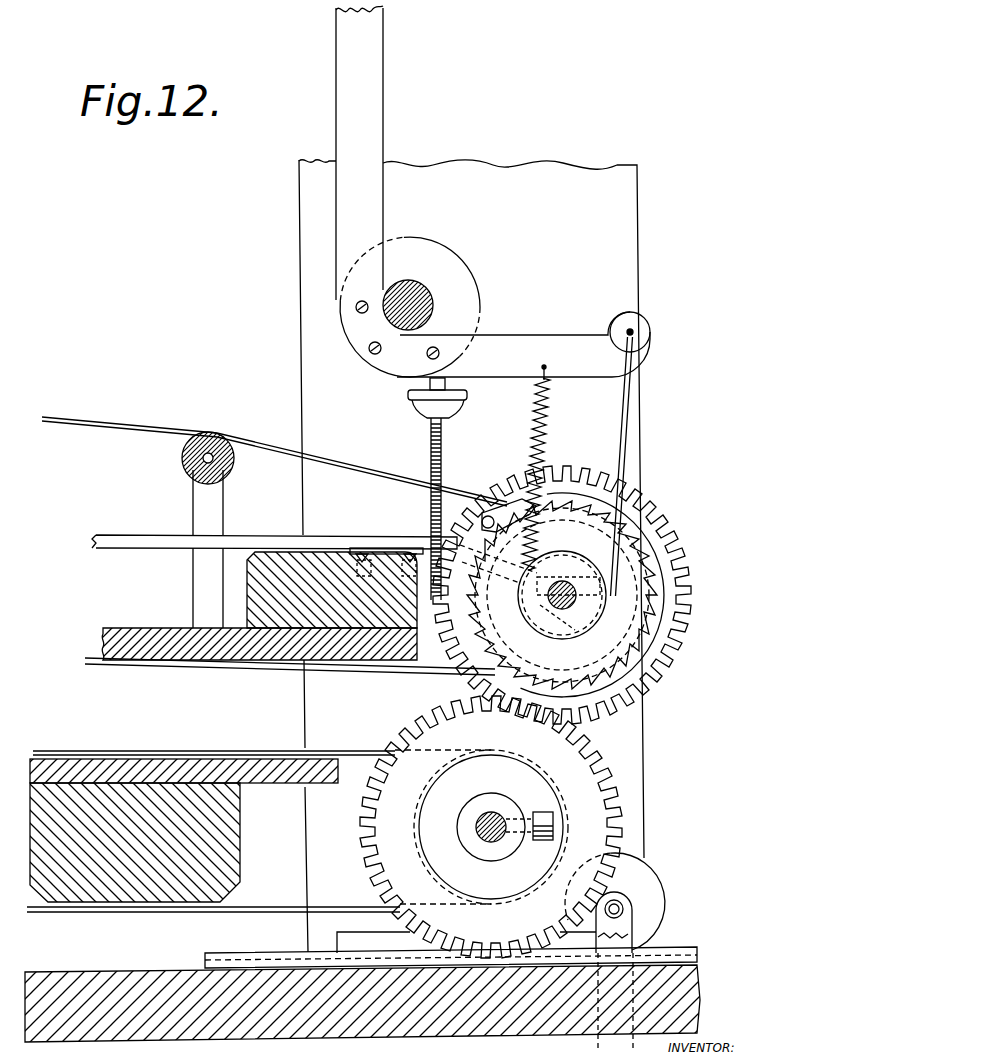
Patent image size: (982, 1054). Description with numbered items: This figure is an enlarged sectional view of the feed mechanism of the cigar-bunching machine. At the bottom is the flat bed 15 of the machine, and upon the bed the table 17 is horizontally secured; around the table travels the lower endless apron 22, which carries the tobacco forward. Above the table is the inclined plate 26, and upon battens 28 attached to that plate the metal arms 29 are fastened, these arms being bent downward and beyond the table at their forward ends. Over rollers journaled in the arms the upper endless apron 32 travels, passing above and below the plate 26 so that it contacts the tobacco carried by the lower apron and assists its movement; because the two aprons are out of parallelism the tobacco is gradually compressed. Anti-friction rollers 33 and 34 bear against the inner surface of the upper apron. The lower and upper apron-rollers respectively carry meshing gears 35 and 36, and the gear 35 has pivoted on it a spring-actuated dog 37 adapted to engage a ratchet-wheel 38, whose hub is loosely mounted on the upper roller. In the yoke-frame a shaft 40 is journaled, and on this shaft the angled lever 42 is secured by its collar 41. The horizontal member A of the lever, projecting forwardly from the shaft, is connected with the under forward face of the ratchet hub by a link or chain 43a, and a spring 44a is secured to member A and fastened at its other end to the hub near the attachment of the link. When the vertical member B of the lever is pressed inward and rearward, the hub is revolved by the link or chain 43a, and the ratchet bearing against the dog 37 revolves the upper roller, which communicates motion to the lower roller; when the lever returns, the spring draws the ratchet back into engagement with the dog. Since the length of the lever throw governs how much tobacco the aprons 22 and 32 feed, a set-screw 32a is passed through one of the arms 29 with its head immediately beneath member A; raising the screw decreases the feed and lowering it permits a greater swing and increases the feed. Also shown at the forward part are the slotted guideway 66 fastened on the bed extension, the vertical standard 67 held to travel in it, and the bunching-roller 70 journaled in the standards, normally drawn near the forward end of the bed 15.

The bed 15 is at (362, 1003).
The table 17 is at (250, 736).
The endless apron 22 is at (350, 751).
The plate 26 is at (259, 631).
The battens 28 is at (256, 599).
The metal arms 29 is at (274, 537).
The endless apron 32 is at (289, 445).
The set-screw 32a is at (432, 453).
The anti-friction roller 33 is at (232, 475).
The anti-friction roller 34 is at (571, 585).
The gear 35 is at (582, 471).
The gear 36 is at (492, 737).
The spring-actuated dog 37 is at (500, 503).
The ratchet-wheel 38 is at (628, 565).
The shaft 40 is at (428, 299).
The collar 41 is at (410, 307).
The angled lever 42 is at (397, 332).
The link or chain 43a is at (628, 413).
The spring 44a is at (560, 421).
The slotted guideway 66 is at (317, 957).
The vertical standard 67 is at (620, 922).
The bunching-roller 70 is at (645, 873).
The horizontal member A is at (523, 344).
The vertical member B is at (330, 194).